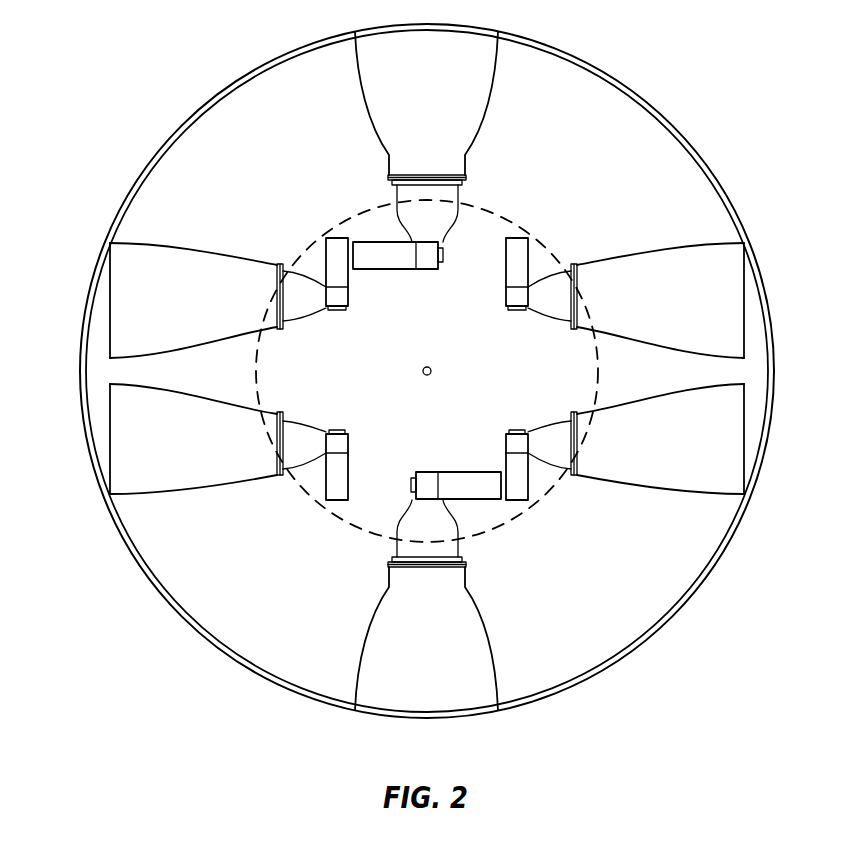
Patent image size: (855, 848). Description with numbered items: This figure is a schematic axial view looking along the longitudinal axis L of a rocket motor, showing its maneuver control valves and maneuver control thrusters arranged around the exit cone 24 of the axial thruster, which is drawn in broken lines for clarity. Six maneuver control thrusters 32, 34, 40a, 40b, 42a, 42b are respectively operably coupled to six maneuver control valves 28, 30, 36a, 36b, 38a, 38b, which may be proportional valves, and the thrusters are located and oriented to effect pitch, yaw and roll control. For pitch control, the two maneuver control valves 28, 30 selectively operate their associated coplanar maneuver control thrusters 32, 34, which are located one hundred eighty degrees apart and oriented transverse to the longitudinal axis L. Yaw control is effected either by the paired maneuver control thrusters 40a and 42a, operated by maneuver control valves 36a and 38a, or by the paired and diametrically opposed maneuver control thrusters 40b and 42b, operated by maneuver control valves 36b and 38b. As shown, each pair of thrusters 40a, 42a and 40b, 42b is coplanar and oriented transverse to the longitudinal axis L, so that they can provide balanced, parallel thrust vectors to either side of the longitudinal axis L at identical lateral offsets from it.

The exit cone 24 is at (338, 520).
The maneuver control valve 28 is at (441, 253).
The maneuver control valve 30 is at (427, 484).
The maneuver control thruster 32 is at (493, 88).
The maneuver control thruster 34 is at (497, 662).
The maneuver control valve 36a is at (515, 443).
The maneuver control valve 36b is at (340, 297).
The maneuver control valve 38a is at (516, 297).
The maneuver control valve 38b is at (339, 442).
The maneuver control thruster 40a is at (745, 427).
The maneuver control thruster 40b is at (152, 243).
The maneuver control thruster 42a is at (745, 317).
The maneuver control thruster 42b is at (146, 496).
The longitudinal axis L is at (422, 371).